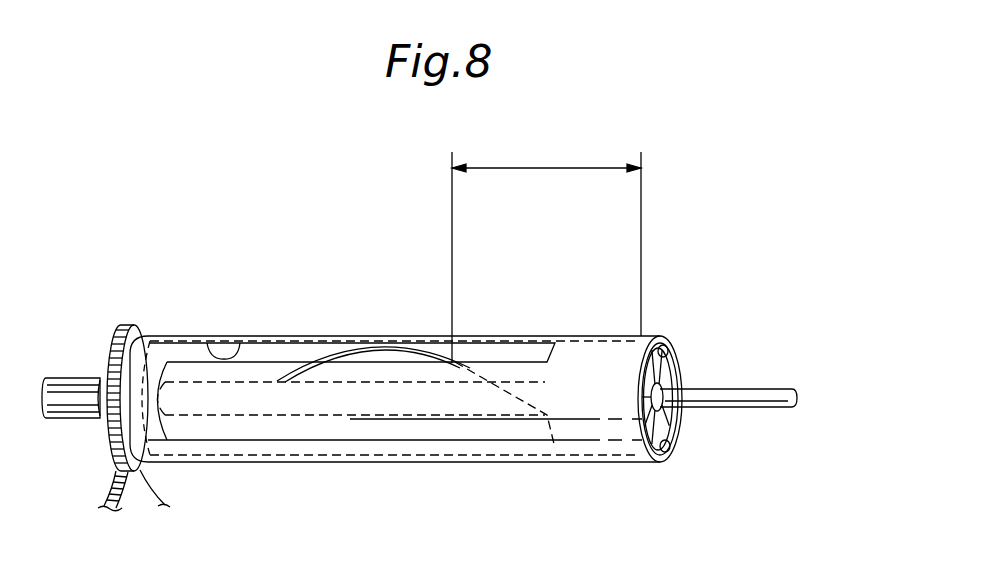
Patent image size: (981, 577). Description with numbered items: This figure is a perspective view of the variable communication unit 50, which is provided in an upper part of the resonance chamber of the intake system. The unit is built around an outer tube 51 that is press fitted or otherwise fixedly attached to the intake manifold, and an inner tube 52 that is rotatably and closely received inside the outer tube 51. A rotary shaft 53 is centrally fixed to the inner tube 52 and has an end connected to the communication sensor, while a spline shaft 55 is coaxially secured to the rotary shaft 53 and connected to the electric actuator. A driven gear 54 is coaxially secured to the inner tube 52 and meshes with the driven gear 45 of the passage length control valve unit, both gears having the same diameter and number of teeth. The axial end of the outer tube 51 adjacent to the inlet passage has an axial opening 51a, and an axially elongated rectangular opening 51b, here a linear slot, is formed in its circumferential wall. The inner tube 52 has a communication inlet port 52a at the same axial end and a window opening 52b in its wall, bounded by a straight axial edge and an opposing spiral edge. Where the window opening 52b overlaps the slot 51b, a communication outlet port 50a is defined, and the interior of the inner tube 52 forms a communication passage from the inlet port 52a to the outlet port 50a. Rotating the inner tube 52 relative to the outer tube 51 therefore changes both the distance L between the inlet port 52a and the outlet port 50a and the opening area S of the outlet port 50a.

The driven gear 45 is at (110, 492).
The variable communication unit 50 is at (665, 204).
The communication outlet port 50a is at (275, 355).
The outer tube 51 is at (275, 461).
The axial opening 51a is at (668, 350).
The axially elongated rectangular opening 51b is at (238, 341).
The inner tube 52 is at (523, 354).
The communication inlet port 52a is at (675, 451).
The window opening 52b is at (320, 360).
The rotary shaft 53 is at (748, 390).
The driven gear 54 is at (134, 326).
The spline shaft 55 is at (70, 388).
The opening area S is at (182, 355).
The distance L is at (546, 251).